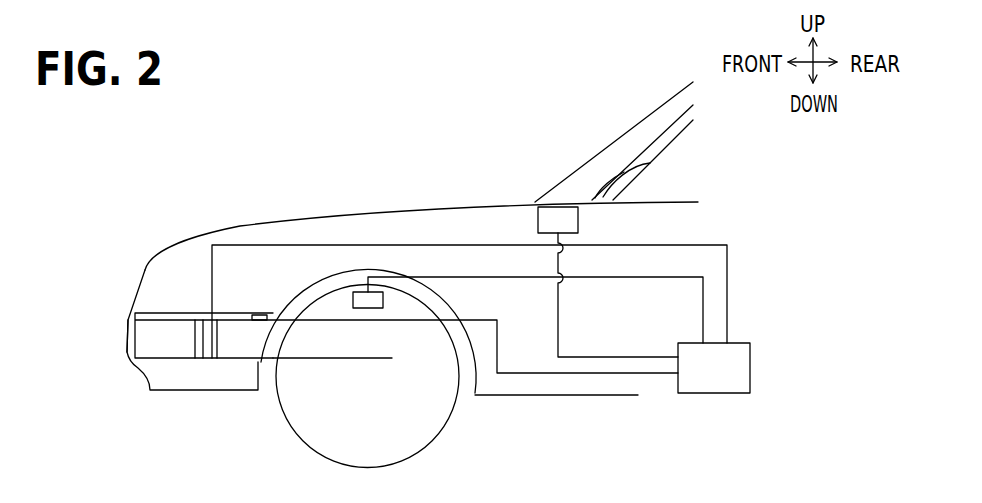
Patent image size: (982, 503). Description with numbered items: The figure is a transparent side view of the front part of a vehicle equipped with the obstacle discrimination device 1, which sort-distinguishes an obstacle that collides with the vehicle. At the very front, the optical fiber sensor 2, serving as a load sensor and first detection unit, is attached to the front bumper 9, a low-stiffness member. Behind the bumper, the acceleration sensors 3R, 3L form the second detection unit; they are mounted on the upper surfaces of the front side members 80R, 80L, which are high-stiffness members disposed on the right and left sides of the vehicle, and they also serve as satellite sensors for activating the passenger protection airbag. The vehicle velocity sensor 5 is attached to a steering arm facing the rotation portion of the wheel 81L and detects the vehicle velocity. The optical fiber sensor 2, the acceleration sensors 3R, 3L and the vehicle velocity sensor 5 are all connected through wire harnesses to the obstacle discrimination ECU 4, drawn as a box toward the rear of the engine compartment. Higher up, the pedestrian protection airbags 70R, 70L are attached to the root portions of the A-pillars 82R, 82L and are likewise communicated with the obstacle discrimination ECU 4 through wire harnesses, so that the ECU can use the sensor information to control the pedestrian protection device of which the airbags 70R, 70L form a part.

The obstacle discrimination device 1 is at (228, 150).
The optical fiber sensor 2 is at (210, 360).
The acceleration sensor 3R is at (321, 248).
The acceleration sensor 3L is at (260, 315).
The obstacle discrimination ECU 4 is at (750, 368).
The vehicle velocity sensor 5 is at (353, 300).
The front bumper 9 is at (126, 338).
The pedestrian protection airbag 70R is at (523, 246).
The pedestrian protection airbag 70L is at (558, 207).
The front side member 80R is at (256, 414).
The front side member 80L is at (307, 360).
The wheel 81L is at (452, 410).
The A-pillar 82R is at (708, 173).
The A-pillar 82L is at (650, 163).